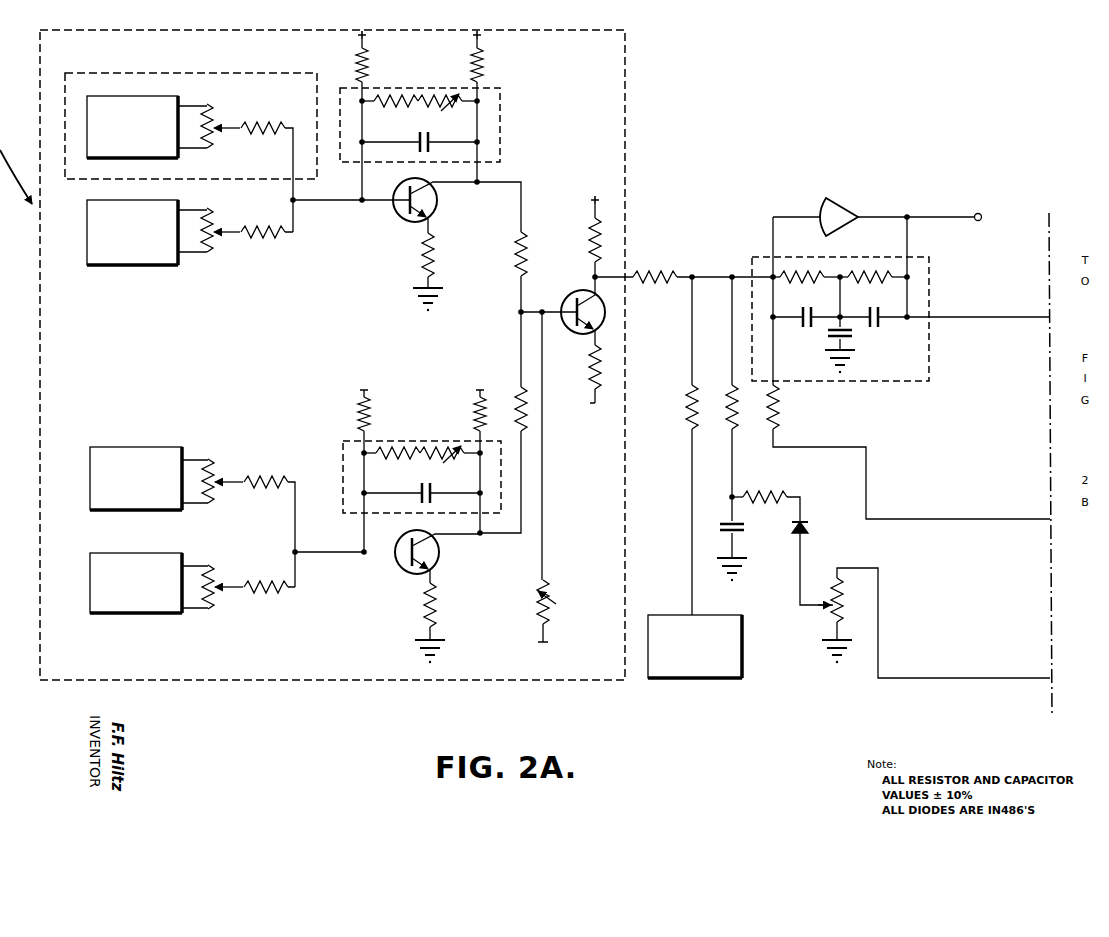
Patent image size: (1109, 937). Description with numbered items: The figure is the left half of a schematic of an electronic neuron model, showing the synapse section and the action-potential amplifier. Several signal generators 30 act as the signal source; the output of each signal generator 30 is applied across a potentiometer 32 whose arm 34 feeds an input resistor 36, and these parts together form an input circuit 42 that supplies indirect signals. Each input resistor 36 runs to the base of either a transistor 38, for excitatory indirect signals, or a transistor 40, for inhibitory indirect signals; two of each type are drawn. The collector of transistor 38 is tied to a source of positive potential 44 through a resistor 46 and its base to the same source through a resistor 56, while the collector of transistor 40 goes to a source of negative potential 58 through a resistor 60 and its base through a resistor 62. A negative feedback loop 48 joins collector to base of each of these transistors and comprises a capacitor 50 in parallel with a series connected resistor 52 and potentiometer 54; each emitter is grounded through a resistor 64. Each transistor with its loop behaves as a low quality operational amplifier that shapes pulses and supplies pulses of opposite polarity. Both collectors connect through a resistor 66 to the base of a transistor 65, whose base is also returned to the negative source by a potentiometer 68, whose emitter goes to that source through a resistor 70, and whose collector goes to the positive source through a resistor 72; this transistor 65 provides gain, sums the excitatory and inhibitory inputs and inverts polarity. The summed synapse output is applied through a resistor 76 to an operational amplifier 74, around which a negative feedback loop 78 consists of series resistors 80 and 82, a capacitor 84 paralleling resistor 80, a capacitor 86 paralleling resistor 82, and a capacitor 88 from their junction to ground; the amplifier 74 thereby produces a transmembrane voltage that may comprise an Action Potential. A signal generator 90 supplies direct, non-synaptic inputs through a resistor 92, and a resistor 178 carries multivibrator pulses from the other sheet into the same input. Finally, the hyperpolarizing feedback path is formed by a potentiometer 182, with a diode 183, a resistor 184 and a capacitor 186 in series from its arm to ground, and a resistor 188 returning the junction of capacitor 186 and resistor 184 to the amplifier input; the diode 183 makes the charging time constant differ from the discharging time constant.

The signal generator 30 is at (120, 97).
The potentiometer 32 is at (209, 116).
The arm 34 is at (222, 134).
The input resistor 36 is at (258, 124).
The transistor 38 is at (439, 204).
The transistor 40 is at (441, 556).
The input circuit 42 is at (142, 72).
The source of positive potential 44 is at (357, 36).
The resistor 46 is at (473, 64).
The negative feedback loop 48 is at (505, 113).
The capacitor 50 is at (418, 149).
The resistor 52 is at (392, 97).
The potentiometer 54 is at (441, 96).
The resistor 56 is at (358, 64).
The source of negative potential 58 is at (363, 389).
The resistor 60 is at (476, 412).
The resistor 62 is at (359, 412).
The resistor 64 is at (424, 258).
The transistor 65 is at (573, 297).
The resistor 66 is at (517, 248).
The potentiometer 68 is at (538, 610).
The resistor 70 is at (590, 371).
The resistor 72 is at (590, 228).
The operational amplifier 74 is at (843, 207).
The resistor 76 is at (662, 275).
The negative feedback loop 78 is at (936, 281).
The resistor 80 is at (864, 270).
The resistor 82 is at (800, 270).
The capacitor 84 is at (880, 322).
The capacitor 86 is at (803, 323).
The capacitor 88 is at (829, 337).
The signal generator 90 is at (680, 614).
The resistor 92 is at (689, 427).
The resistor 178 is at (769, 427).
The potentiometer 182 is at (833, 591).
The diode 183 is at (805, 527).
The resistor 184 is at (771, 496).
The capacitor 186 is at (729, 520).
The resistor 188 is at (729, 427).